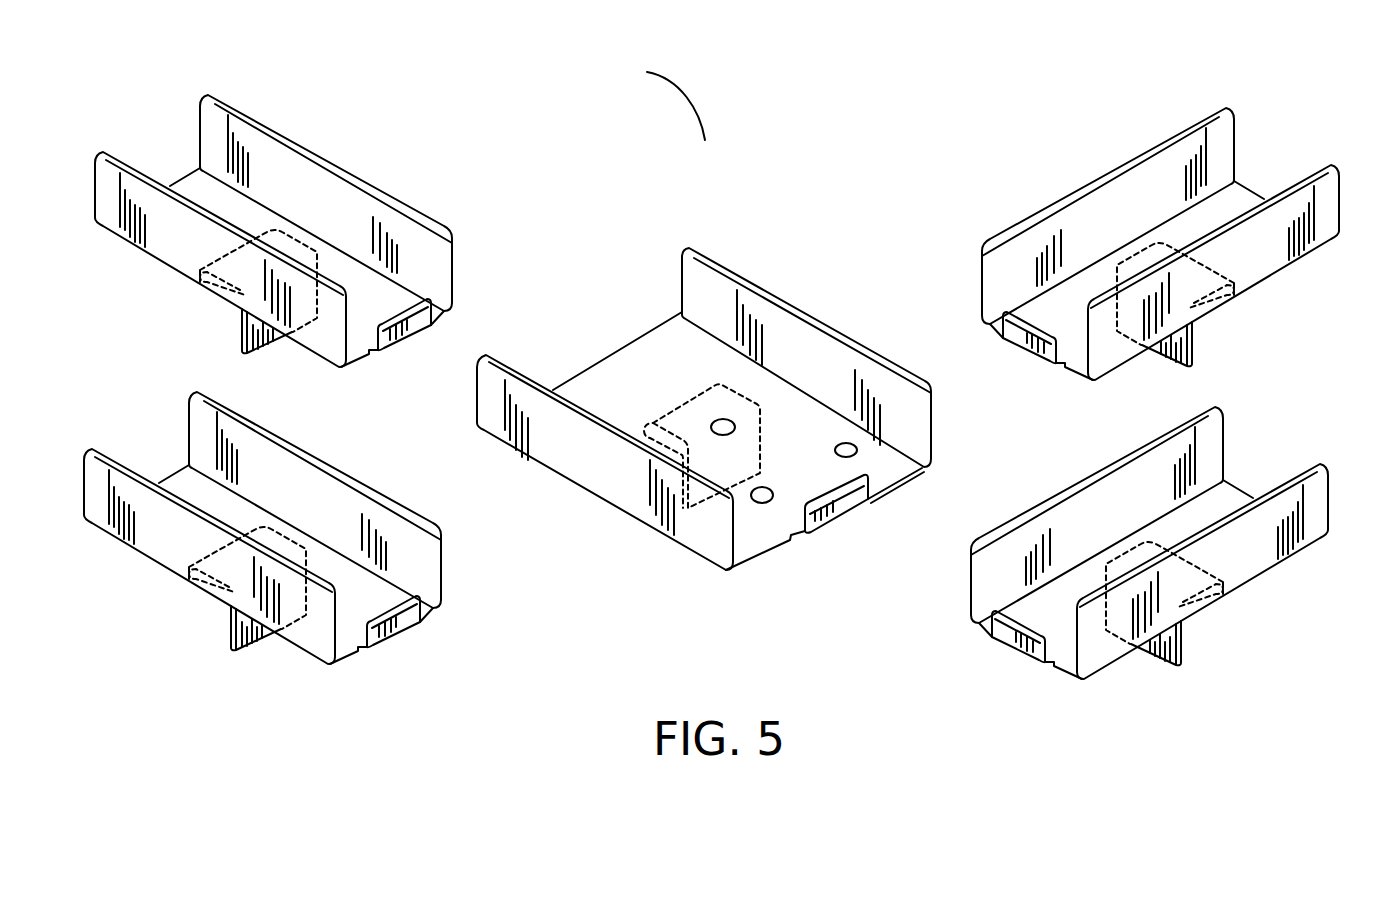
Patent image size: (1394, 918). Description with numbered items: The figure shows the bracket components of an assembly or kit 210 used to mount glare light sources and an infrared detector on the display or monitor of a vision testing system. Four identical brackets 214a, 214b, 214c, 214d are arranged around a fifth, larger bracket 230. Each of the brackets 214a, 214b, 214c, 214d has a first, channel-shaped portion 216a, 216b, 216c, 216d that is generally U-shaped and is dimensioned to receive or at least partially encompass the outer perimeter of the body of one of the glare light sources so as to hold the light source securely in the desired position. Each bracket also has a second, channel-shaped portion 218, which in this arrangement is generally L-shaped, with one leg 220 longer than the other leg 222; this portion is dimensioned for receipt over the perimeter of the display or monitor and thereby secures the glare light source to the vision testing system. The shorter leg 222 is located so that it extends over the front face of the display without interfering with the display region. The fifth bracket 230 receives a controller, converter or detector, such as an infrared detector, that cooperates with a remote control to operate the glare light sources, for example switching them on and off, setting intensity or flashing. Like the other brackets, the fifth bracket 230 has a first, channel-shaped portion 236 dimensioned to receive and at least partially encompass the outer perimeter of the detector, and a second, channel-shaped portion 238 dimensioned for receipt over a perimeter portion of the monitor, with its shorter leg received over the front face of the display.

The assembly or kit 210 is at (655, 100).
The bracket 214a is at (262, 231).
The bracket 214b is at (1177, 244).
The bracket 214c is at (1169, 543).
The bracket 214d is at (254, 562).
The first channel-shaped portion 216a is at (303, 143).
The first channel-shaped portion 216b is at (1117, 170).
The first channel-shaped portion 216c is at (1107, 463).
The first channel-shaped portion 216d is at (308, 452).
The second channel-shaped portion 218 is at (227, 617).
The longer leg 220 is at (223, 645).
The shorter leg 222 is at (193, 574).
The fifth bracket 230 is at (704, 390).
The first channel-shaped portion 236 is at (703, 292).
The second channel-shaped portion 238 is at (679, 412).